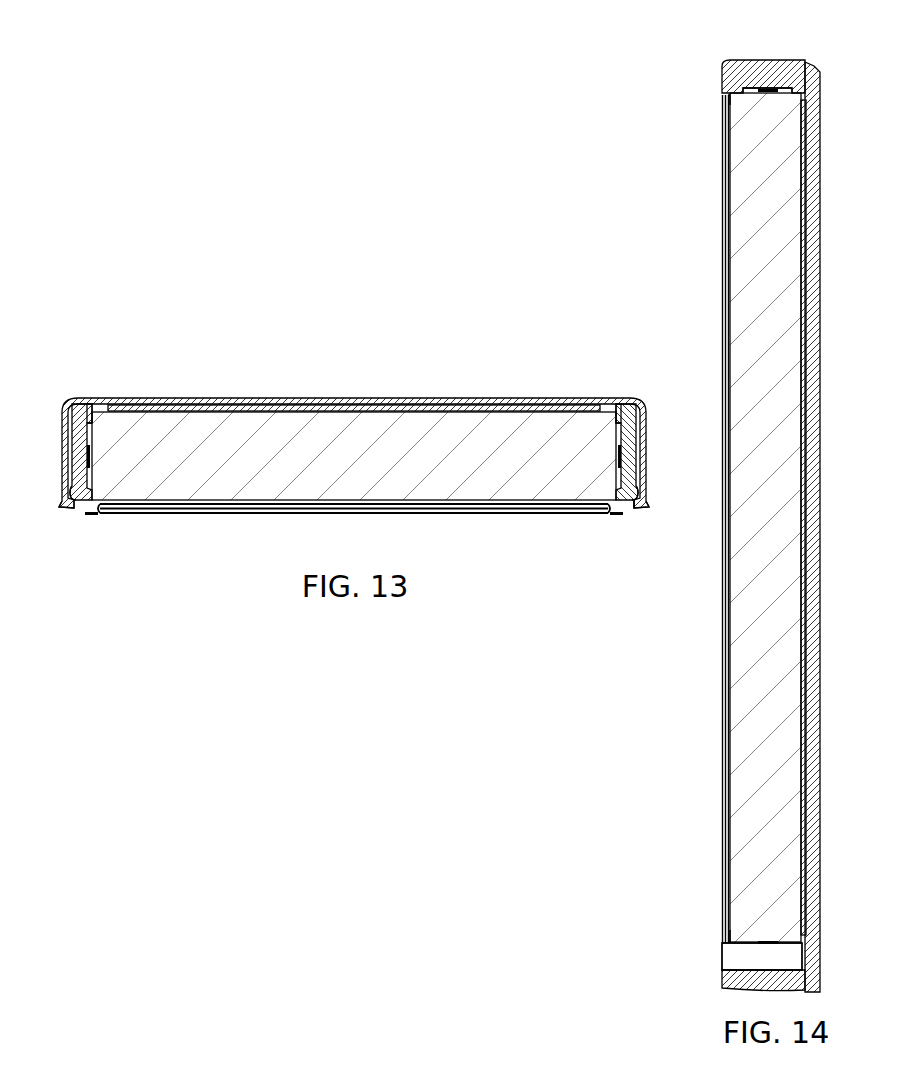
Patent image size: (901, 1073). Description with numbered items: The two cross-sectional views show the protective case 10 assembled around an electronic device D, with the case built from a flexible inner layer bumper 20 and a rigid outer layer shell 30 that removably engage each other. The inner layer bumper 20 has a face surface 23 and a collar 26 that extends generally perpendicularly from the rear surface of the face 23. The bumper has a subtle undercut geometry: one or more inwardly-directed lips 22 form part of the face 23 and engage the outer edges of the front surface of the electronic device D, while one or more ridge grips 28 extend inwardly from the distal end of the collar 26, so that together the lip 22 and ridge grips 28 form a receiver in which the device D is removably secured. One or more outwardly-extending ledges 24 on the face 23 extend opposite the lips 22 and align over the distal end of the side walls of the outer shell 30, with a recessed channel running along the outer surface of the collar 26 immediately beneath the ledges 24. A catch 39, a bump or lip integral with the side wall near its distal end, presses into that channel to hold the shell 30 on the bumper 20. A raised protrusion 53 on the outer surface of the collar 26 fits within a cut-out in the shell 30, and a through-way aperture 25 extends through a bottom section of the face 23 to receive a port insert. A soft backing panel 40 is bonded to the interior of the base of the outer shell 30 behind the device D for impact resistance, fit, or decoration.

In FIG. 13, the protective case 10 is at (426, 342).
In FIG. 14, the protective case 10 is at (679, 94).
In FIG. 13, the inner layer bumper 20 is at (84, 506).
In FIG. 14, the inner layer bumper 20 is at (751, 68).
In FIG. 13, the inwardly-directed lip 22 is at (94, 516).
In FIG. 14, the inwardly-directed lip 22 is at (726, 102).
In FIG. 13, the face surface 23 is at (634, 518).
In FIG. 13, the outwardly-extending ledge 24 is at (68, 508).
In FIG. 14, the through-way aperture 25 is at (745, 952).
In FIG. 13, the collar 26 is at (80, 452).
In FIG. 13, the ridge grip 28 is at (97, 412).
In FIG. 13, the outer layer shell 30 is at (143, 393).
In FIG. 14, the outer layer shell 30 is at (821, 78).
In FIG. 13, the catch 39 is at (72, 490).
In FIG. 13, the backing panel 40 is at (312, 407).
In FIG. 14, the backing panel 40 is at (808, 586).
In FIG. 14, the raised protrusion 53 is at (787, 89).
In FIG. 13, the electronic device D is at (458, 492).
In FIG. 14, the electronic device D is at (740, 655).